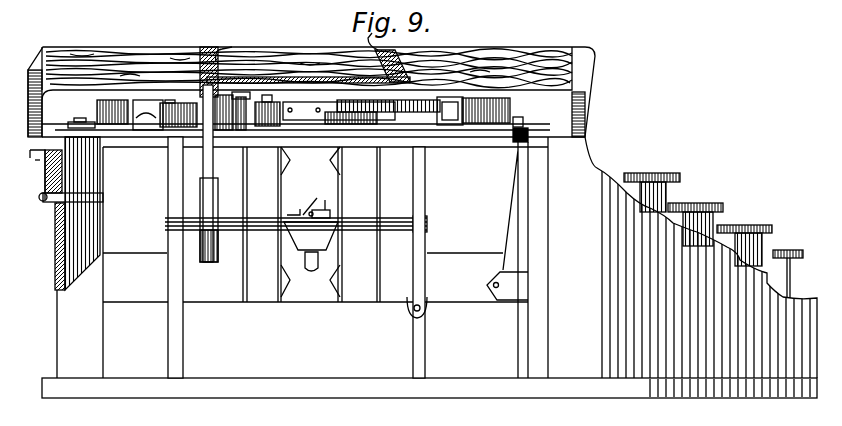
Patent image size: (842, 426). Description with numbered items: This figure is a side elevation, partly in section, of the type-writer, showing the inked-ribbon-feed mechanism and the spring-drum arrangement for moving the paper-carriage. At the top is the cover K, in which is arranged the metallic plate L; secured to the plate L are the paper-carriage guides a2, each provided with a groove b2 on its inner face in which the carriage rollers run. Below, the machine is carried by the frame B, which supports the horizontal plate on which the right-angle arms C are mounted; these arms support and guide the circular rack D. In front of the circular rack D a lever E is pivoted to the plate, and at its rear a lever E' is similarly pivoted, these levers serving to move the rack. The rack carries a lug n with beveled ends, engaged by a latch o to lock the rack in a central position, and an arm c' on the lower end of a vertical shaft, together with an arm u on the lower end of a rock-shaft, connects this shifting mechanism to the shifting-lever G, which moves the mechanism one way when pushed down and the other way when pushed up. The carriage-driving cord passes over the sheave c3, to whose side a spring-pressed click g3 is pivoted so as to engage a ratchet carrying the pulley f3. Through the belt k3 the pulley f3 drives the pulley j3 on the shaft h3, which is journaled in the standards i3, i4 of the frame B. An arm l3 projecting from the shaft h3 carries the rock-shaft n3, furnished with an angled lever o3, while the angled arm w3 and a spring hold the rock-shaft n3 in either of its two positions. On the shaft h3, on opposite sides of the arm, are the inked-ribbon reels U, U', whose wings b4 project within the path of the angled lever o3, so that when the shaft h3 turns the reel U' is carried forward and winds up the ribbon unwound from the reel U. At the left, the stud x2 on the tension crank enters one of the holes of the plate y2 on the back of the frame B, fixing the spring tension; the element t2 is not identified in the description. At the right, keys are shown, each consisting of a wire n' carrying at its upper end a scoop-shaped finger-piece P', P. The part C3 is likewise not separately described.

The cover K is at (522, 47).
The paper-carriage guides a2 is at (219, 41).
The groove b2 is at (232, 47).
The metallic plate L is at (294, 78).
The lever E' is at (80, 114).
The right-angle arms C is at (148, 113).
The pulley f3 is at (192, 103).
The sheave c3 is at (228, 94).
The gear bracket C3 is at (243, 91).
The latch o is at (266, 104).
The lug n is at (339, 111).
The arm c' is at (362, 118).
The circular rack D is at (509, 108).
The lever E is at (518, 244).
The arm u is at (35, 160).
The pin t2 is at (36, 165).
The stud x2 is at (60, 155).
The plate y2 is at (55, 235).
The frame B is at (57, 330).
The standard i3 is at (178, 332).
The belt k3 is at (205, 170).
The pulley j3 is at (216, 210).
The inked-ribbon reel U is at (262, 224).
The inked-ribbon reel U' is at (359, 224).
The shaft h3 is at (391, 218).
The standard i4 is at (421, 347).
The wings b4 is at (327, 168).
The angled lever o3 is at (293, 214).
The rock-shaft n3 is at (311, 199).
The arm l3 is at (323, 204).
The angled arm w3 is at (311, 236).
The spring-pressed click g3 is at (313, 273).
The finger-piece P' is at (698, 209).
The finger-piece P is at (695, 216).
The wire n' is at (687, 187).
The shifting-lever G is at (792, 258).